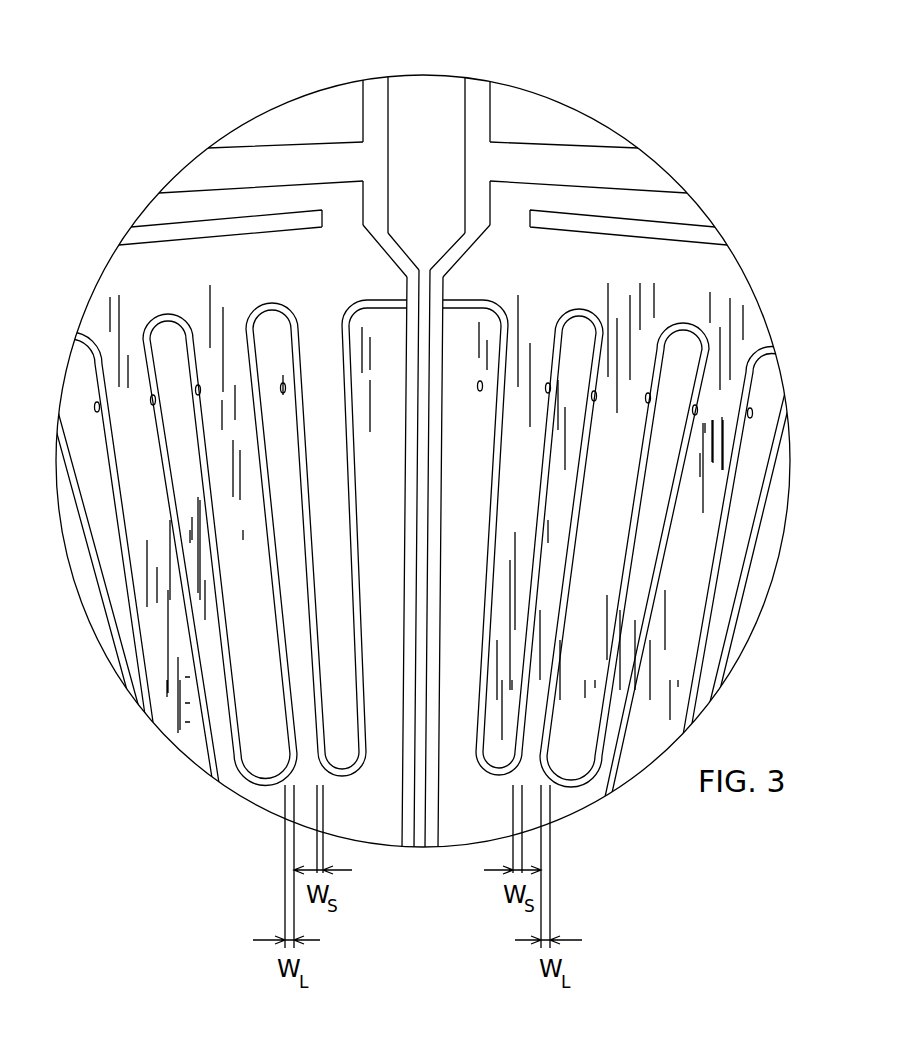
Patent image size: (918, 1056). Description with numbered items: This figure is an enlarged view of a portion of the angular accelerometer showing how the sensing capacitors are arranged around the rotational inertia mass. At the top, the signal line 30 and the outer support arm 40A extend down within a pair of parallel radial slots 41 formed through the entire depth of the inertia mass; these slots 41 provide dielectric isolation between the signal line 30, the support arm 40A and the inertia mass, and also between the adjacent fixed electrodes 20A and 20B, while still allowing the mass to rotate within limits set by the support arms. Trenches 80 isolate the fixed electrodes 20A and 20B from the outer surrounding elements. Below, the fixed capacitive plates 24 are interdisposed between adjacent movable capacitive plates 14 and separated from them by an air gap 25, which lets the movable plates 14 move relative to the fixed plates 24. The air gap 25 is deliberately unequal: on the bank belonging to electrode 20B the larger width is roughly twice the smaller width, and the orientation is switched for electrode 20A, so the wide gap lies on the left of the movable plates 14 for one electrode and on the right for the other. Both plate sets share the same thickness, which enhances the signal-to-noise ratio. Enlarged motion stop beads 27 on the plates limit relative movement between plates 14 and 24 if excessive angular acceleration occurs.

The signal line 30 is at (428, 84).
The trenches 80 is at (303, 152).
The fixed electrode 20A is at (248, 253).
The fixed electrode 20B is at (548, 250).
The outer support arm 40A is at (425, 285).
The radial slots 41 is at (415, 470).
The motion stop beads 27 is at (152, 402).
The fixed capacitive plates 24 is at (600, 500).
The air gap 25 is at (283, 713).
The movable capacitive plates 14 is at (230, 763).